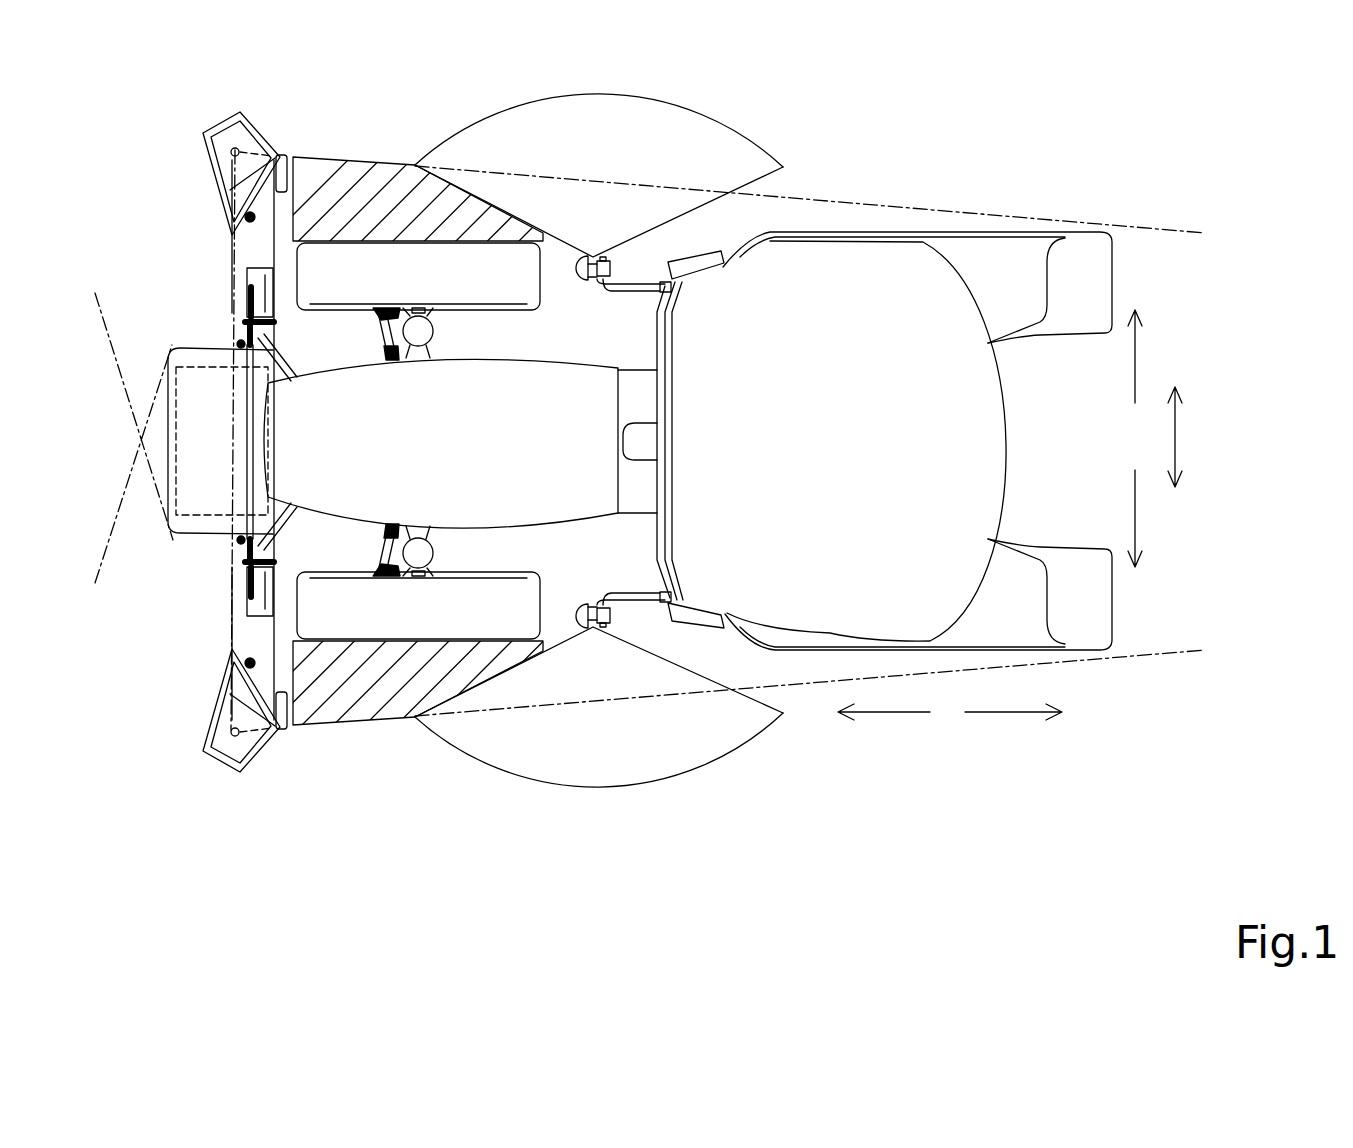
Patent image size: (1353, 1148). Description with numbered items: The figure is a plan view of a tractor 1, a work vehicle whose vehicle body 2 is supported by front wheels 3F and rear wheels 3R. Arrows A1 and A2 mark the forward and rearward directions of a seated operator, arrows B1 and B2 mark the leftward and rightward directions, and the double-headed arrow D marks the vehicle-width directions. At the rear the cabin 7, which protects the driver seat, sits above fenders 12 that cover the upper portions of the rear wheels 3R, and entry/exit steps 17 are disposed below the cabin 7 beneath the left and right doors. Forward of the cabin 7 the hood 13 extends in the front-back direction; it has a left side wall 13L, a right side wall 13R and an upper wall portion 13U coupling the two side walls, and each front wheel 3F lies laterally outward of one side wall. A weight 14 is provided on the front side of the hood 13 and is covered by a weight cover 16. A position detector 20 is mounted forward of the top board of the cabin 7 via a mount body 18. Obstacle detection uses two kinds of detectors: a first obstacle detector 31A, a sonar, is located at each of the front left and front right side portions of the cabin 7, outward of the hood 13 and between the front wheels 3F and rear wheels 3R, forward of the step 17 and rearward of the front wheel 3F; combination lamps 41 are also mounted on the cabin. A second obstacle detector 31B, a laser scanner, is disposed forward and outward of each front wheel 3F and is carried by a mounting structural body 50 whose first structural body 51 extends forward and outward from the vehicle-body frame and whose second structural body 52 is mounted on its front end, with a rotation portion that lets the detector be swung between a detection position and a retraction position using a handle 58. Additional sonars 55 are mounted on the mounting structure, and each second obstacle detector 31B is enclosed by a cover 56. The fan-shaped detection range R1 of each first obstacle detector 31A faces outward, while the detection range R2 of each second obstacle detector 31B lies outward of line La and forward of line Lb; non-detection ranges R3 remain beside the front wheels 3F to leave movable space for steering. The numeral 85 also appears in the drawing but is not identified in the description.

The tractor 1 is at (896, 158).
The vehicle body 2 is at (646, 350).
The front wheels 3F is at (398, 240).
The rear wheels 3R is at (1113, 258).
The driver seat protective body (cabin) 7 is at (917, 250).
The fender 12 is at (1020, 307).
The hood 13 is at (483, 336).
The right side wall 13R is at (567, 358).
The left side wall 13L is at (567, 525).
The upper wall portion 13U is at (603, 483).
The weight 14 is at (200, 350).
The weight cover 16 is at (160, 480).
The entry/exit step 17 is at (694, 250).
The mount body 18 is at (673, 540).
The position detector 20 is at (655, 440).
The first obstacle detector 31A is at (605, 255).
The second obstacle detector 31B is at (228, 115).
The combination lamps 41 is at (583, 255).
The mounting structural body 50 is at (242, 320).
The first structural body 51 is at (290, 373).
The second structural body 52 is at (237, 313).
The sonar 55 is at (227, 190).
The cover 56 is at (242, 247).
The handle 58 is at (258, 122).
The headlamp 85 is at (600, 298).
The detection range of first obstacle detector R1 is at (753, 143).
The detection range of second obstacle detector R2 is at (106, 455).
The non-detection range R3 is at (341, 171).
The line La is at (972, 213).
The line Lb is at (225, 262).
The arrow A1 (forward direction) A1 is at (898, 714).
The arrow A2 (rearward direction) A2 is at (1018, 714).
The arrow B1 (leftward direction) B1 is at (1137, 517).
The arrow B2 (rightward direction) B2 is at (1137, 362).
The double-headed arrow D (vehicle-width directions) D is at (1177, 440).